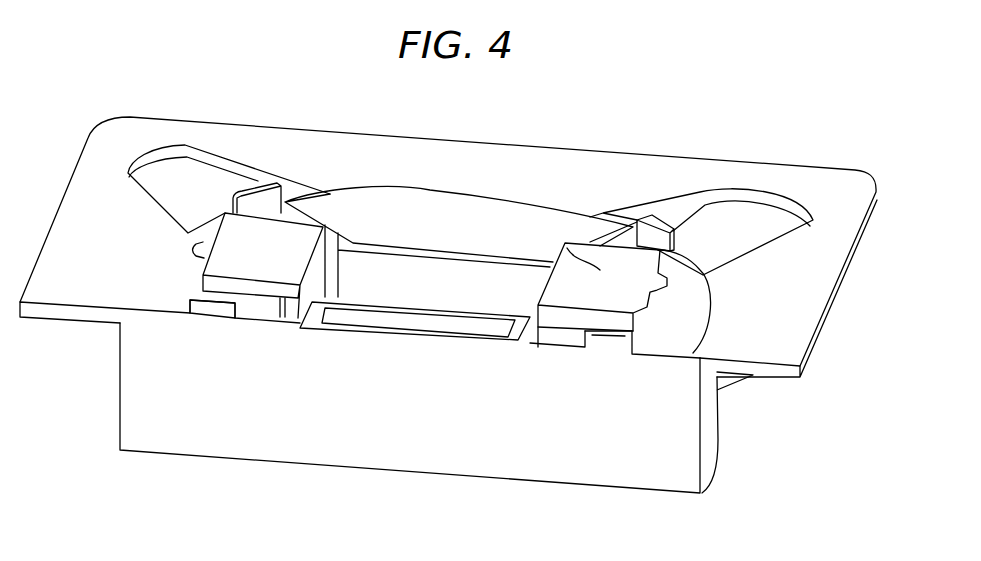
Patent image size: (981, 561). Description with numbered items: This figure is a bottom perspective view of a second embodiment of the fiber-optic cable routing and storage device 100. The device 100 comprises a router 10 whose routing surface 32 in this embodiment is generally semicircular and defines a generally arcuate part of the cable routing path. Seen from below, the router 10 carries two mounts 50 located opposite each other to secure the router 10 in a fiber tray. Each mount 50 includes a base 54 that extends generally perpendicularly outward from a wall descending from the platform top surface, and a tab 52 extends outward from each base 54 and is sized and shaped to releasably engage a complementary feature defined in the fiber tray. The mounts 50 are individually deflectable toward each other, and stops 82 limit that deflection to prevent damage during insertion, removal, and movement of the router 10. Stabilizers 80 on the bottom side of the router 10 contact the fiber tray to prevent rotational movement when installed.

The cable routing and storage device 100 is at (622, 118).
The router 10 is at (728, 474).
The routing surface 32 is at (712, 424).
The stabilizers 80 is at (262, 207).
The stops 82 is at (318, 243).
The tab 52 is at (700, 284).
The base 54 is at (583, 268).
The mounts 50 is at (562, 320).